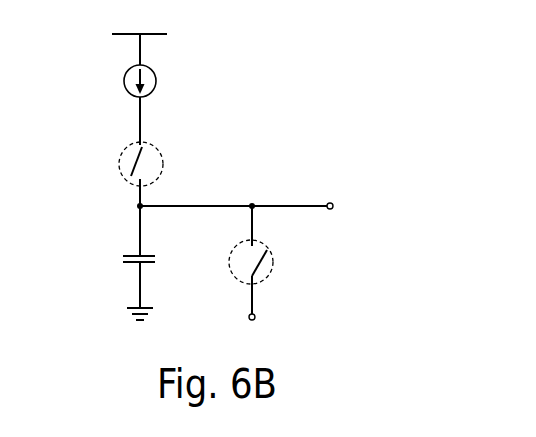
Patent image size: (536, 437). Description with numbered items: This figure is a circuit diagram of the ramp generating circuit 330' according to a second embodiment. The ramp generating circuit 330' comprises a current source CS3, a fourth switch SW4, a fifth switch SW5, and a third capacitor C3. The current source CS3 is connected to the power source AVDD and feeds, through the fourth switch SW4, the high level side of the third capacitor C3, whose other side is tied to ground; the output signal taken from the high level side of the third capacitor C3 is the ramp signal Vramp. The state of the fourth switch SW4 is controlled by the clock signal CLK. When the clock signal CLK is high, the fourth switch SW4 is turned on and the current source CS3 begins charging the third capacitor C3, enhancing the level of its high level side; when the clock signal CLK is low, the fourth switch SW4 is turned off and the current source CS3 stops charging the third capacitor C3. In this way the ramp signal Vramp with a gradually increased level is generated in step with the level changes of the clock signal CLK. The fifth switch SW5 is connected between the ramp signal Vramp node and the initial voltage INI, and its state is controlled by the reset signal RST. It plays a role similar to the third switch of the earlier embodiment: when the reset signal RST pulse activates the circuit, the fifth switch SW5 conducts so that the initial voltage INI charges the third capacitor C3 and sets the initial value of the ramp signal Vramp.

The ramp generating circuit 330' is at (331, 80).
The current source CS3 is at (164, 81).
The fourth switch SW4 is at (156, 145).
The fifth switch SW5 is at (265, 279).
The third capacitor C3 is at (158, 257).
The clock signal CLK is at (114, 165).
The reset signal RST is at (279, 260).
The power source AVDD is at (101, 41).
The ramp signal Vramp is at (367, 208).
The initial voltage INI is at (254, 347).